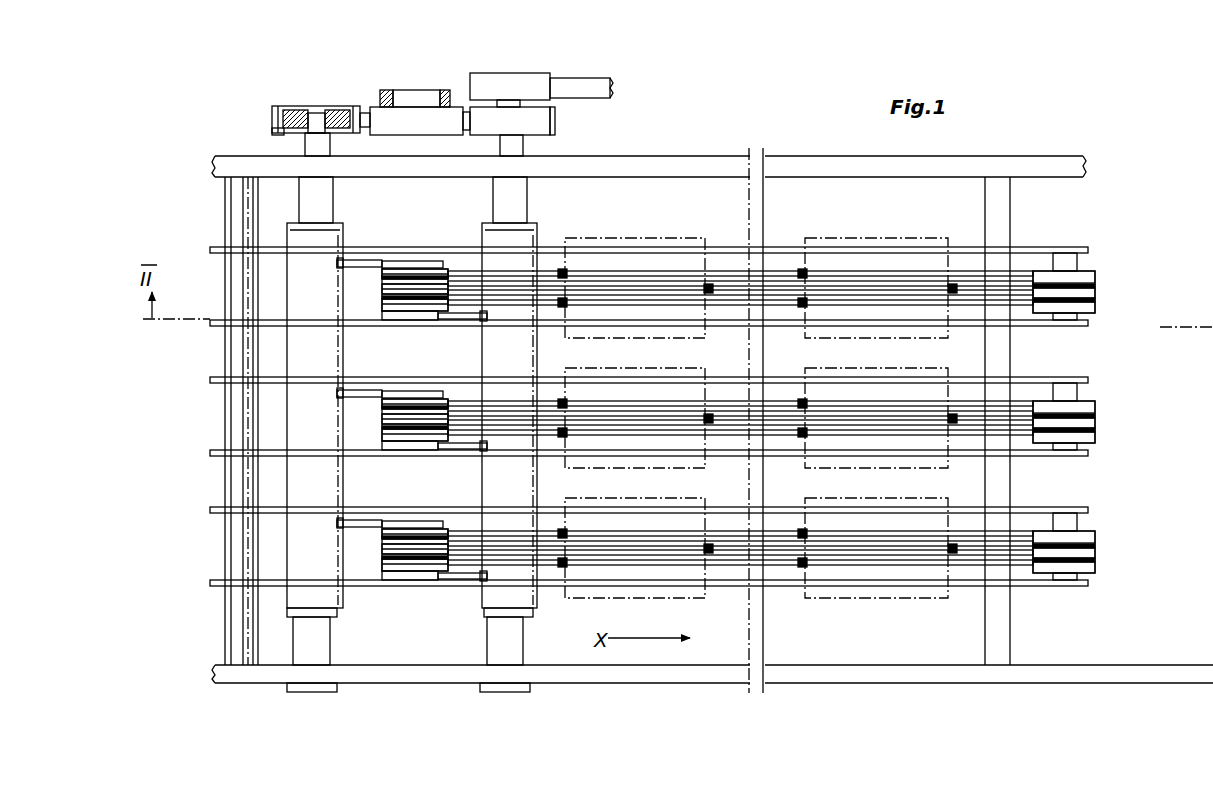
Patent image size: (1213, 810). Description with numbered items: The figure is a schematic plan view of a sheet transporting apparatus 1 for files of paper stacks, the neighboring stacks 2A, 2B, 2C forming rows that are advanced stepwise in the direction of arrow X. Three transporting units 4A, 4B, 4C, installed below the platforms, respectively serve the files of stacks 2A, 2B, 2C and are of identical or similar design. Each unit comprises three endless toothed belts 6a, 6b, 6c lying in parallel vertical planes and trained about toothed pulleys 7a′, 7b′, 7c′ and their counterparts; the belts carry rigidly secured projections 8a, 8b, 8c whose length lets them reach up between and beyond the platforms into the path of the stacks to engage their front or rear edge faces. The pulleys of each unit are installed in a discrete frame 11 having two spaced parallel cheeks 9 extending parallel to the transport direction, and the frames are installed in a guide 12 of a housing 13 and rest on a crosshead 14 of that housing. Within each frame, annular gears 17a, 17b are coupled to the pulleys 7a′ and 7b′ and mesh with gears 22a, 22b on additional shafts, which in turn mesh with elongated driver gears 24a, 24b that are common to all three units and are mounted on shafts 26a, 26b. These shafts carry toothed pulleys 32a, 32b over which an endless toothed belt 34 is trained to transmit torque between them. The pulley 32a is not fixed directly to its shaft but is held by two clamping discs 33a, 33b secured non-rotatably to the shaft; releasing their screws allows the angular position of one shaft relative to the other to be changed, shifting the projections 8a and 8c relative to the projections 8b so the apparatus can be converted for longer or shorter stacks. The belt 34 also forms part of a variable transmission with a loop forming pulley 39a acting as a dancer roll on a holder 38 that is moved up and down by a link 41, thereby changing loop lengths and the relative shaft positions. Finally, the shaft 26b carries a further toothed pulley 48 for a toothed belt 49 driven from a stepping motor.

The sheet transporting apparatus 1 is at (772, 120).
The stack 2A is at (805, 238).
The stack 2B is at (714, 370).
The stack 2C is at (740, 500).
The transporting unit 4A is at (203, 257).
The transporting unit 4B is at (180, 417).
The transporting unit 4C is at (190, 545).
The toothed belt 6a is at (1095, 276).
The toothed belt 6b is at (1095, 296).
The toothed belt 6c is at (1095, 310).
The toothed pulley 7a′ is at (382, 272).
The toothed pulley 7b′ is at (382, 287).
The toothed pulley 7c′ is at (382, 302).
The projection 8a is at (563, 270).
The projection 8b is at (711, 296).
The projection 8c is at (563, 306).
The cheek 9 is at (268, 260).
The frame 11 is at (1068, 222).
The guide 12 is at (223, 417).
The housing 13 is at (650, 157).
The crosshead 14 is at (1010, 633).
The annular gear 17a is at (418, 260).
The annular gear 17b is at (400, 320).
The gear 22a is at (360, 260).
The gear 22b is at (464, 320).
The elongated driver gear 24a is at (337, 238).
The elongated driver gear 24b is at (482, 240).
The shaft 26a is at (330, 192).
The shaft 26b is at (522, 192).
The toothed pulley 32a is at (308, 105).
The toothed pulley 32b is at (550, 132).
The clamping disc 33a is at (282, 132).
The clamping disc 33b is at (320, 106).
The toothed belt 34 is at (366, 114).
The holder 38 is at (425, 92).
The loop forming pulley 39a is at (453, 123).
The link 41 is at (389, 91).
The toothed pulley 48 is at (497, 76).
The toothed belt 49 is at (577, 88).